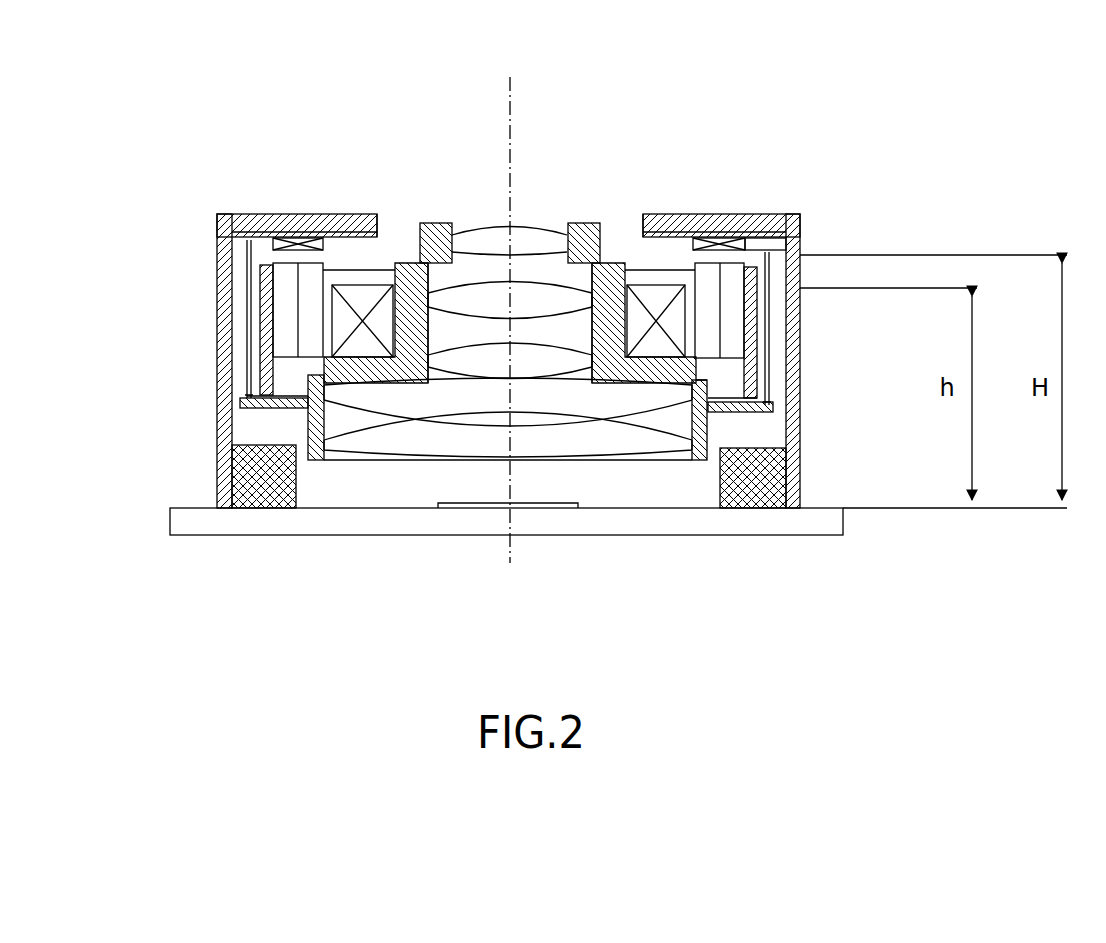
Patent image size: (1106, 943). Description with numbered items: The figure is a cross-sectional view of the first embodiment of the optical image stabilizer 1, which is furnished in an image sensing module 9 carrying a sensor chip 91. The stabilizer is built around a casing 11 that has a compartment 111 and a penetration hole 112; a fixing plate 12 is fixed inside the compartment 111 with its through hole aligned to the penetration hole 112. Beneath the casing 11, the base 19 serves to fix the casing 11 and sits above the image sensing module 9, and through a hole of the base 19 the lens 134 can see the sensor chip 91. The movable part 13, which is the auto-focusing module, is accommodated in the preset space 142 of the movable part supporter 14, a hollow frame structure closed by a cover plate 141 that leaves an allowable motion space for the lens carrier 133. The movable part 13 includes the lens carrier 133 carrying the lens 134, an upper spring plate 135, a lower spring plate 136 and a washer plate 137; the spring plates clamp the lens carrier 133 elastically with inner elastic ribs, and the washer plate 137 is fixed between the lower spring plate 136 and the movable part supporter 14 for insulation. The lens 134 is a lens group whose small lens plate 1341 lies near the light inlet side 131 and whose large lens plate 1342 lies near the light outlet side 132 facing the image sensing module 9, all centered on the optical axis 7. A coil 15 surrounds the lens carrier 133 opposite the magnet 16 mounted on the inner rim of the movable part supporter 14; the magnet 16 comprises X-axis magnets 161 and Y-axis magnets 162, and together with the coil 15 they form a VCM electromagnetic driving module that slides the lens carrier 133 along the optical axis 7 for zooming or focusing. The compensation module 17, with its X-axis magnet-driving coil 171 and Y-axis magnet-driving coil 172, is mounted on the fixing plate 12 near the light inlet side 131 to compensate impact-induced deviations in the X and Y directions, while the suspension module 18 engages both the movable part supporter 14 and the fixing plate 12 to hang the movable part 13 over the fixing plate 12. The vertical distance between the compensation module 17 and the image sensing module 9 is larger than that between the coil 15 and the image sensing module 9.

The optical image stabilizer 1 is at (866, 106).
The optical axis 7 is at (508, 93).
The image sensing module 9 is at (610, 530).
The sensor chip 91 is at (540, 505).
The casing 11 is at (732, 215).
The compartment 111 is at (640, 215).
The penetration hole 112 is at (551, 223).
The fixing plate 12 is at (788, 216).
The movable part 13 is at (533, 218).
The light inlet side 131 is at (500, 223).
The light outlet side 132 is at (662, 463).
The lens carrier 133 is at (705, 388).
The lens 134 is at (710, 445).
The small lens plate 1341 is at (487, 248).
The large lens plate 1342 is at (433, 447).
The upper spring plate 135 is at (292, 257).
The lower spring plate 136 is at (220, 413).
The washer plate 137 is at (247, 398).
The movable part supporter 14 is at (705, 372).
The cover plate 141 is at (773, 407).
The preset space 142 is at (330, 298).
The coil 15 is at (247, 346).
The magnet 16 is at (788, 268).
The X-axis magnet 161 is at (727, 345).
The Y-axis magnet 162 is at (285, 277).
The compensation module 17 is at (768, 247).
The X-axis magnet-driving coil 171 is at (765, 215).
The Y-axis magnet-driving coil 172 is at (220, 232).
The suspension module 18 is at (222, 357).
The base 19 is at (785, 486).